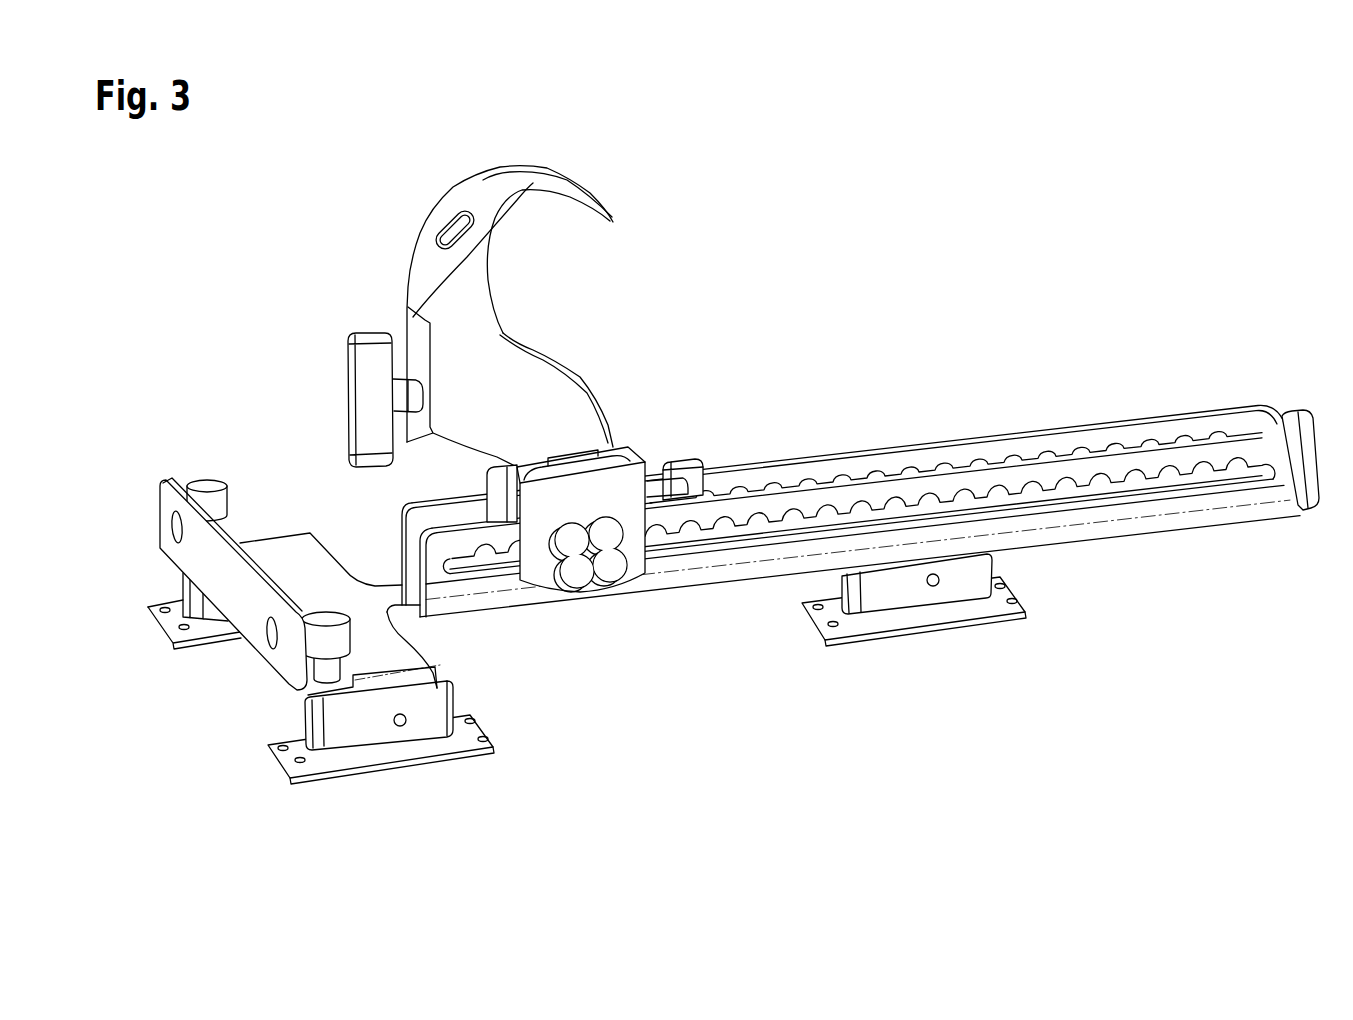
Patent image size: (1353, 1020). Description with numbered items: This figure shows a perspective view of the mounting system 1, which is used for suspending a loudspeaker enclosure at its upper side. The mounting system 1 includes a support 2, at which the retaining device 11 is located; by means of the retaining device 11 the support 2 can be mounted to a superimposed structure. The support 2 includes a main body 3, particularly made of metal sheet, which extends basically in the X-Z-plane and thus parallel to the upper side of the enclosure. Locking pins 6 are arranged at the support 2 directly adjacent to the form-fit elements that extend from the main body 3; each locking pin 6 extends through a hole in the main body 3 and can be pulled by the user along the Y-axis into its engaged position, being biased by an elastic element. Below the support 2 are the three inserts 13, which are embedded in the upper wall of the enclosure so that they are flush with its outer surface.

The mounting system 1 is at (806, 240).
The support 2 is at (825, 470).
The main body 3 is at (287, 552).
The locking pin 6 is at (205, 484).
The retaining device 11 is at (486, 197).
The inserts 13 is at (160, 617).